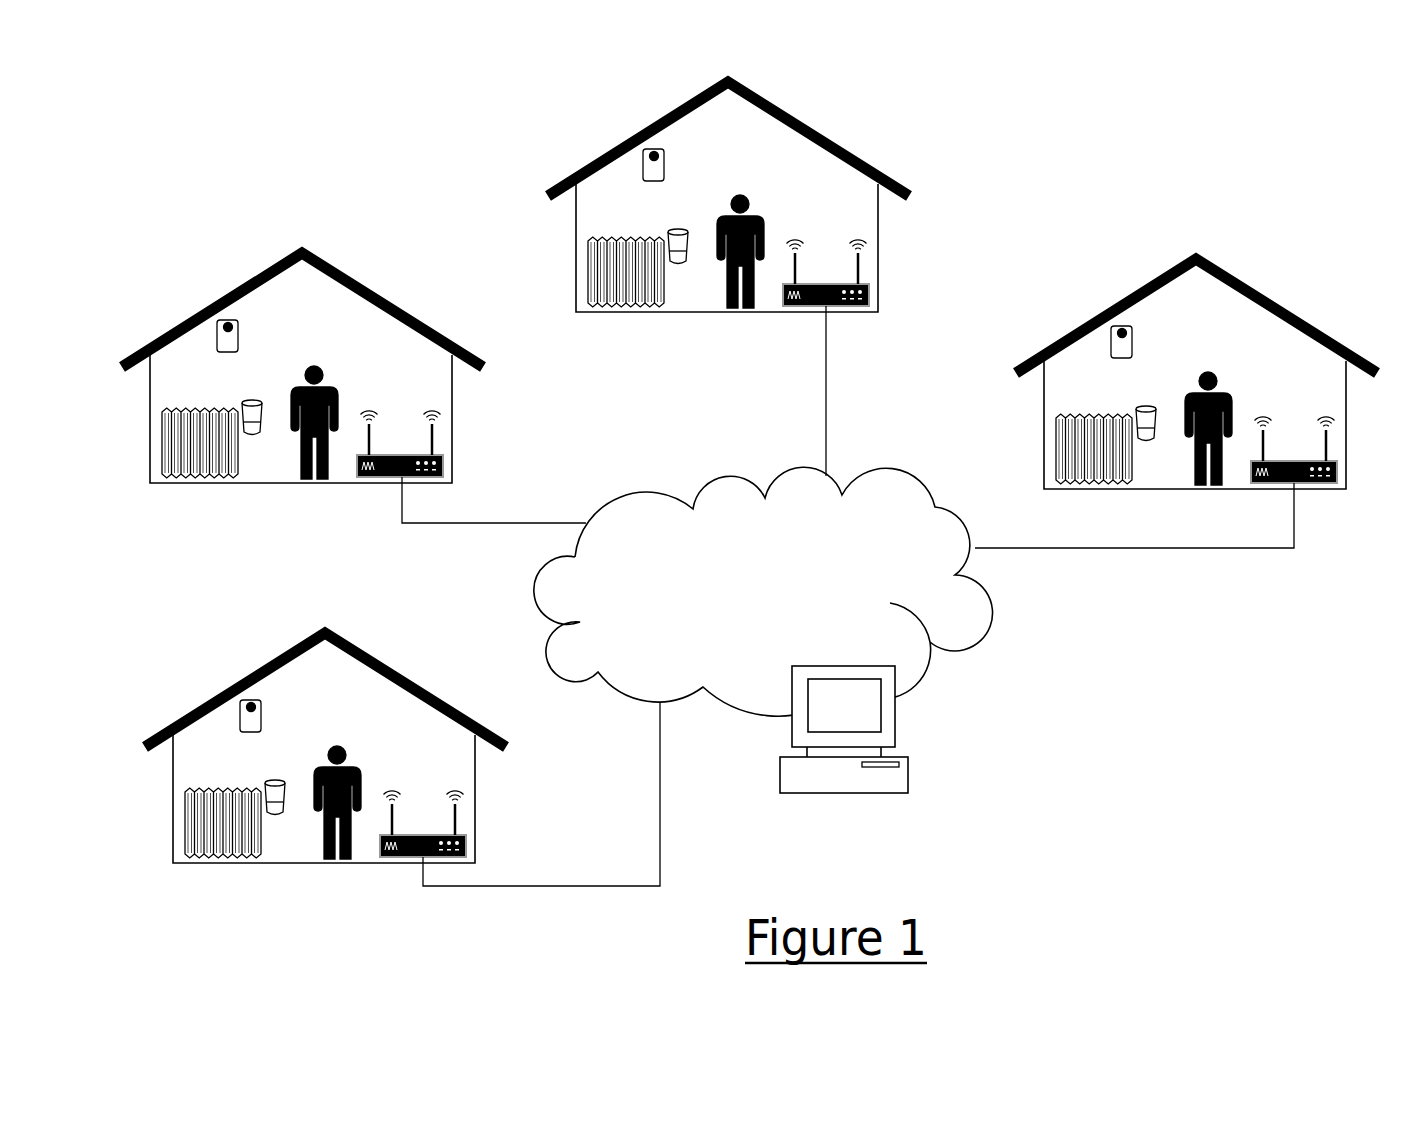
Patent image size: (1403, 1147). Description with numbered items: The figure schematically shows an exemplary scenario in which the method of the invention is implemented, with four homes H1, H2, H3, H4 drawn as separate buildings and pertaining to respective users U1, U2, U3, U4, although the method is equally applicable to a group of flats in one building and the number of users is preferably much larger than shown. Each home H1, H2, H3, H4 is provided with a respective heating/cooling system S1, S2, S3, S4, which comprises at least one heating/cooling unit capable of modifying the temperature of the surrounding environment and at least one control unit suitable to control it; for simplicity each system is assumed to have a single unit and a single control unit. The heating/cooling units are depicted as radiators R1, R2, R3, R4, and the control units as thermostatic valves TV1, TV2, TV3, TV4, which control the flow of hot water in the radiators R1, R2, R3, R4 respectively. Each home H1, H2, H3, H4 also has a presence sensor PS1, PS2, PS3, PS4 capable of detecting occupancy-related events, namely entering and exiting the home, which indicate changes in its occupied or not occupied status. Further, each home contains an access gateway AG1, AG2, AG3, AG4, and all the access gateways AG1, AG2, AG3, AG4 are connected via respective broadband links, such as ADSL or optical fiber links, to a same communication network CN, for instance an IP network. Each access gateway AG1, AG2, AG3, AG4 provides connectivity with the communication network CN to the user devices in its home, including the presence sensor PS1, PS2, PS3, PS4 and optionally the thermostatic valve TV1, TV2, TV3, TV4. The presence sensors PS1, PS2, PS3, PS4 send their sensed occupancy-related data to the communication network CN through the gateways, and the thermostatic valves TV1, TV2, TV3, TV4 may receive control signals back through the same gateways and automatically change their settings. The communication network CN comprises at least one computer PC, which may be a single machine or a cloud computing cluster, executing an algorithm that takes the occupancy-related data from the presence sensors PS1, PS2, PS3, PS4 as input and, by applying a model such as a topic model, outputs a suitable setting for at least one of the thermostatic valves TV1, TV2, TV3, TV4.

The home H1 is at (325, 690).
The home H2 is at (367, 293).
The home H3 is at (728, 139).
The home H4 is at (1196, 316).
The heating/cooling system S1 is at (297, 799).
The heating/cooling system S2 is at (147, 438).
The heating/cooling system S3 is at (700, 248).
The heating/cooling system S4 is at (1168, 425).
The presence sensor PS1 is at (280, 710).
The presence sensor PS2 is at (240, 337).
The presence sensor PS3 is at (683, 159).
The presence sensor PS4 is at (1151, 336).
The radiator R1 is at (223, 845).
The radiator R2 is at (203, 473).
The radiator R3 is at (626, 294).
The radiator R4 is at (1094, 471).
The thermostatic valve TV1 is at (289, 818).
The thermostatic valve TV2 is at (253, 437).
The thermostatic valve TV3 is at (692, 267).
The thermostatic valve TV4 is at (1160, 444).
The user U1 is at (355, 798).
The user U2 is at (333, 395).
The user U3 is at (758, 247).
The user U4 is at (1226, 424).
The access gateway AG1 is at (460, 824).
The access gateway AG2 is at (443, 462).
The access gateway AG3 is at (863, 273).
The access gateway AG4 is at (1327, 450).
The communication network CN is at (763, 591).
The computer PC is at (907, 775).